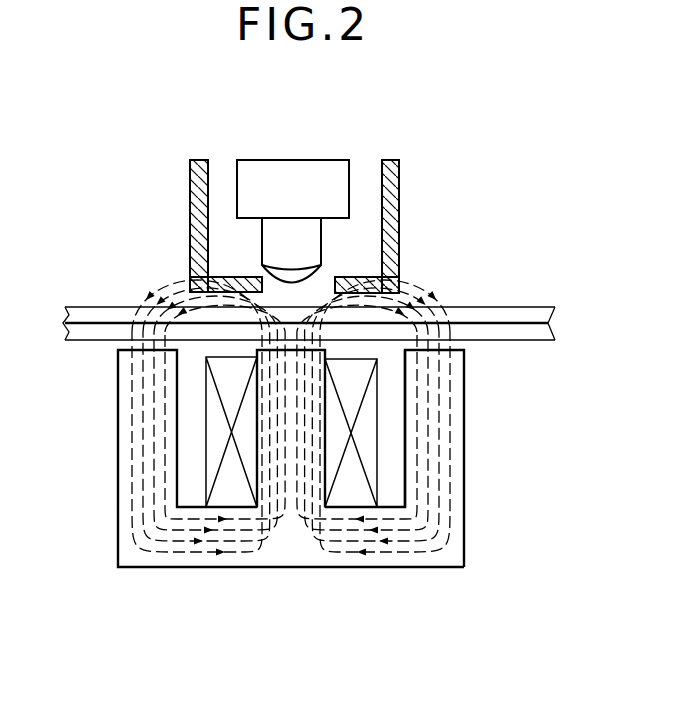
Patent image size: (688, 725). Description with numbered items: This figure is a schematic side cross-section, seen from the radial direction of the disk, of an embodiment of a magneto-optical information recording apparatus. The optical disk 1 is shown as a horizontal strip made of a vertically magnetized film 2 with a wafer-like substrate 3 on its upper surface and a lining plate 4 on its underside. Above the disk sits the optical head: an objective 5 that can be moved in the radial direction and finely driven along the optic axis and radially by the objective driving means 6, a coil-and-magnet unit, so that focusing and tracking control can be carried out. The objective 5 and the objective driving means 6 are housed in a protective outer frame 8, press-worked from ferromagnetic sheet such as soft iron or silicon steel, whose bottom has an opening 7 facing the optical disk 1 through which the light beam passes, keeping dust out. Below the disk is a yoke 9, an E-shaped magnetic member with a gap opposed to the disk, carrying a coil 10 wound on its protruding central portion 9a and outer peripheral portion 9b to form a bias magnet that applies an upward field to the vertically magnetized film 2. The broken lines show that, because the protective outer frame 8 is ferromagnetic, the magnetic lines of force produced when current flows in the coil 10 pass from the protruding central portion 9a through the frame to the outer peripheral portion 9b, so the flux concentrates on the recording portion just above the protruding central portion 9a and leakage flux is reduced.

The optical disk 1 is at (328, 326).
The vertically magnetized film 2 is at (548, 323).
The wafer-like substrate 3 is at (517, 307).
The lining plate 4 is at (532, 341).
The objective 5 is at (283, 262).
The objective driving means 6 is at (318, 172).
The opening 7 is at (337, 283).
The protective outer frame 8 is at (190, 185).
The yoke 9 is at (465, 545).
The protruding central portion 9a is at (294, 487).
The outer peripheral portion 9b is at (462, 450).
The coil 10 is at (210, 452).